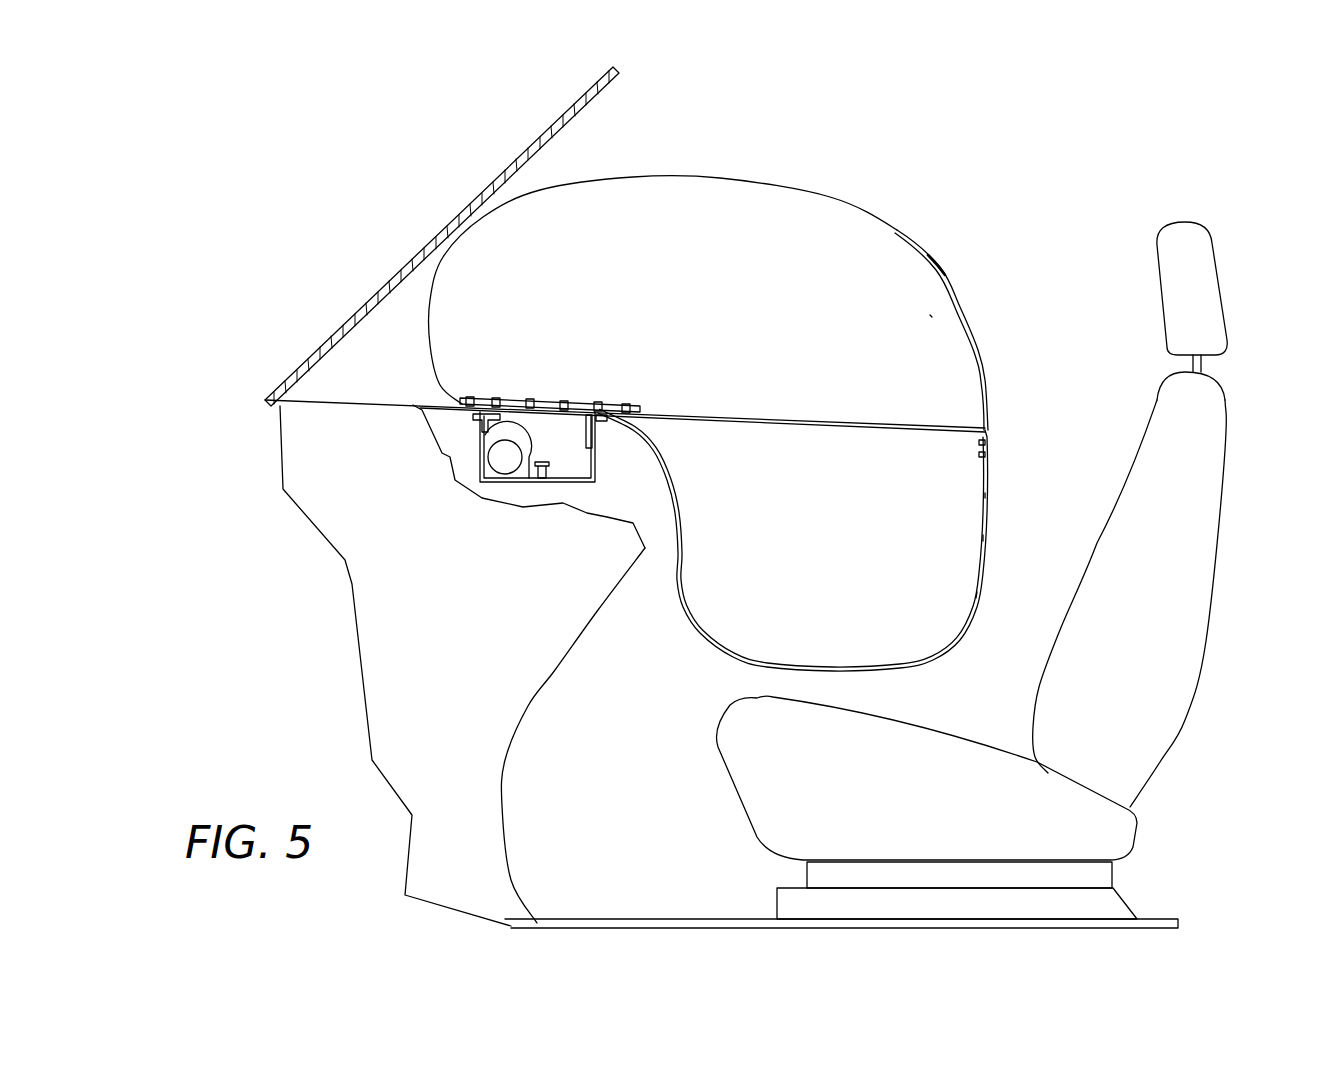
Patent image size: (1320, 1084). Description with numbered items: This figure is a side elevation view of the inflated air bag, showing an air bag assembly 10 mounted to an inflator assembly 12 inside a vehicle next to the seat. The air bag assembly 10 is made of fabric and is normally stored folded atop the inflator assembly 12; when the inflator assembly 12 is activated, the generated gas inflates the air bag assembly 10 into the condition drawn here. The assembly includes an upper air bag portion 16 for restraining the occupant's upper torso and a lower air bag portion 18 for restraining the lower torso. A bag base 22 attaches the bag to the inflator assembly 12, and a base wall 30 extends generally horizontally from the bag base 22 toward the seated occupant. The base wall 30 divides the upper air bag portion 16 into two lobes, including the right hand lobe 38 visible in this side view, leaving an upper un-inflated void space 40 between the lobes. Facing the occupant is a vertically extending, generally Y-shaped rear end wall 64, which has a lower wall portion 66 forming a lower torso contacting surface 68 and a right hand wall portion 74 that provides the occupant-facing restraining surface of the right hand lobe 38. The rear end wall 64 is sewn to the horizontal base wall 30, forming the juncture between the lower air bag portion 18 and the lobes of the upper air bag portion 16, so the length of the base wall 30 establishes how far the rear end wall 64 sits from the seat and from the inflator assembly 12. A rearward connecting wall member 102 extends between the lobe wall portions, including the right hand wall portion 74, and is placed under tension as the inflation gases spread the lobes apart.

The air bag assembly 10 is at (853, 181).
The inflator assembly 12 is at (532, 490).
The upper air bag portion 16 is at (955, 234).
The lower air bag portion 18 is at (953, 648).
The bag base 22 is at (608, 407).
The base wall 30 is at (884, 420).
The right hand lobe 38 is at (880, 250).
The upper un-inflated void space 40 is at (662, 237).
The rear end wall 64 is at (990, 495).
The lower wall portion 66 is at (984, 538).
The lower torso contacting surface 68 is at (979, 595).
The right hand wall portion 74 is at (930, 315).
The rearward connecting wall member 102 is at (940, 264).